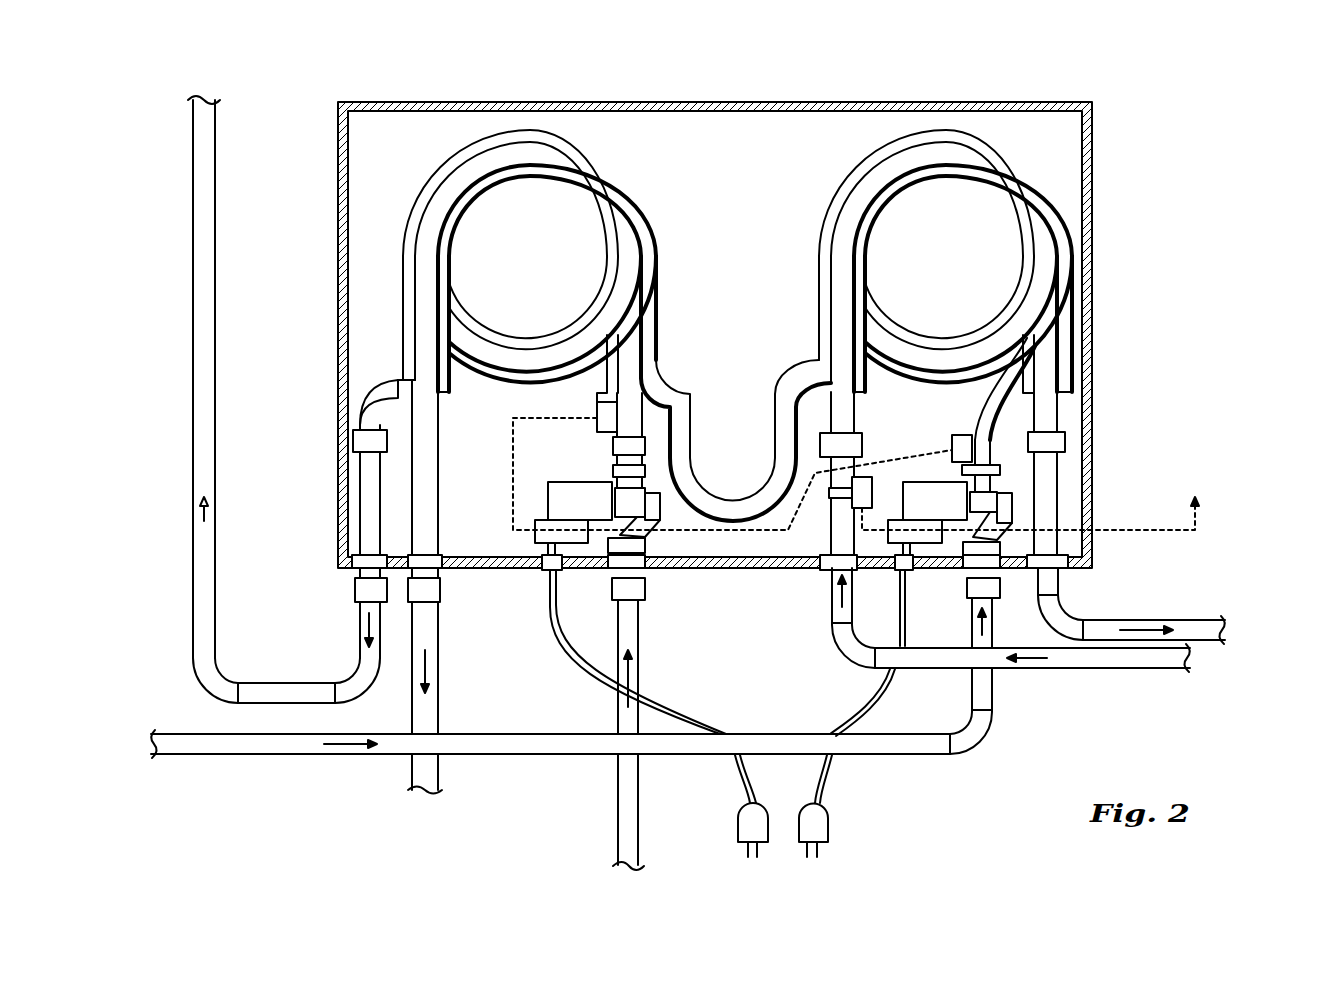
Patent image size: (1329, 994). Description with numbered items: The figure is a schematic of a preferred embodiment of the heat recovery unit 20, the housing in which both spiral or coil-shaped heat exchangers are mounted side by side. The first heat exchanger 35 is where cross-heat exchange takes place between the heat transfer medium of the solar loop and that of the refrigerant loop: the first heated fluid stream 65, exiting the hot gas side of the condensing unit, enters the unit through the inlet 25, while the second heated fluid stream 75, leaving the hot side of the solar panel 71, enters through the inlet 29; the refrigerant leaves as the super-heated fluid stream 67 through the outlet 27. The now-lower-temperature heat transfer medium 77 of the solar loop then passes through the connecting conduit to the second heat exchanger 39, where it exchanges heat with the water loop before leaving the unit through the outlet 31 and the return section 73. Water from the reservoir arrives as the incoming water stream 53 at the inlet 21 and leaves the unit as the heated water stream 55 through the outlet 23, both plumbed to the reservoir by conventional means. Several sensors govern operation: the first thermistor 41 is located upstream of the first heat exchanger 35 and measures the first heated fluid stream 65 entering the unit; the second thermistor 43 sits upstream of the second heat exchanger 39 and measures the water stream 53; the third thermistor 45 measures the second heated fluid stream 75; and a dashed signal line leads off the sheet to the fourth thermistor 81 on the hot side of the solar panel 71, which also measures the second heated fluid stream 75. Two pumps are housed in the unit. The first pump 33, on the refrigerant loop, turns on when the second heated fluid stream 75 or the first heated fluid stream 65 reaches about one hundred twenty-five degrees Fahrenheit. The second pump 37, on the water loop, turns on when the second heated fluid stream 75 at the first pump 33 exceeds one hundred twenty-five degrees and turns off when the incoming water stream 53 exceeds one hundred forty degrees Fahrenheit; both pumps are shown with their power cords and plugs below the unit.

The heat recovery unit 20 is at (757, 101).
The second heat exchanger 39 is at (539, 130).
The first heat exchanger 35 is at (955, 130).
The heat transfer medium 77 is at (737, 500).
The return pipe elbow section 73 is at (295, 686).
The outlet 31 is at (362, 562).
The outlet 23 is at (440, 566).
The second thermistor 43 is at (597, 425).
The inlet 21 is at (638, 567).
The second pump 37 is at (568, 513).
The water stream 53 is at (620, 786).
The inlet 25 is at (826, 568).
The first thermistor 41 is at (866, 490).
The third thermistor 45 is at (960, 440).
The first pump 33 is at (921, 513).
The inlet 29 is at (967, 573).
The outlet 27 is at (1054, 568).
The super-heated fluid stream 67 is at (1190, 623).
The first heated fluid stream 65 is at (1107, 661).
The heated water stream 55 is at (384, 757).
The second heated fluid stream 75 is at (884, 750).
The fourth thermistor 81 is at (1108, 454).
The solar panel 71 is at (1105, 482).